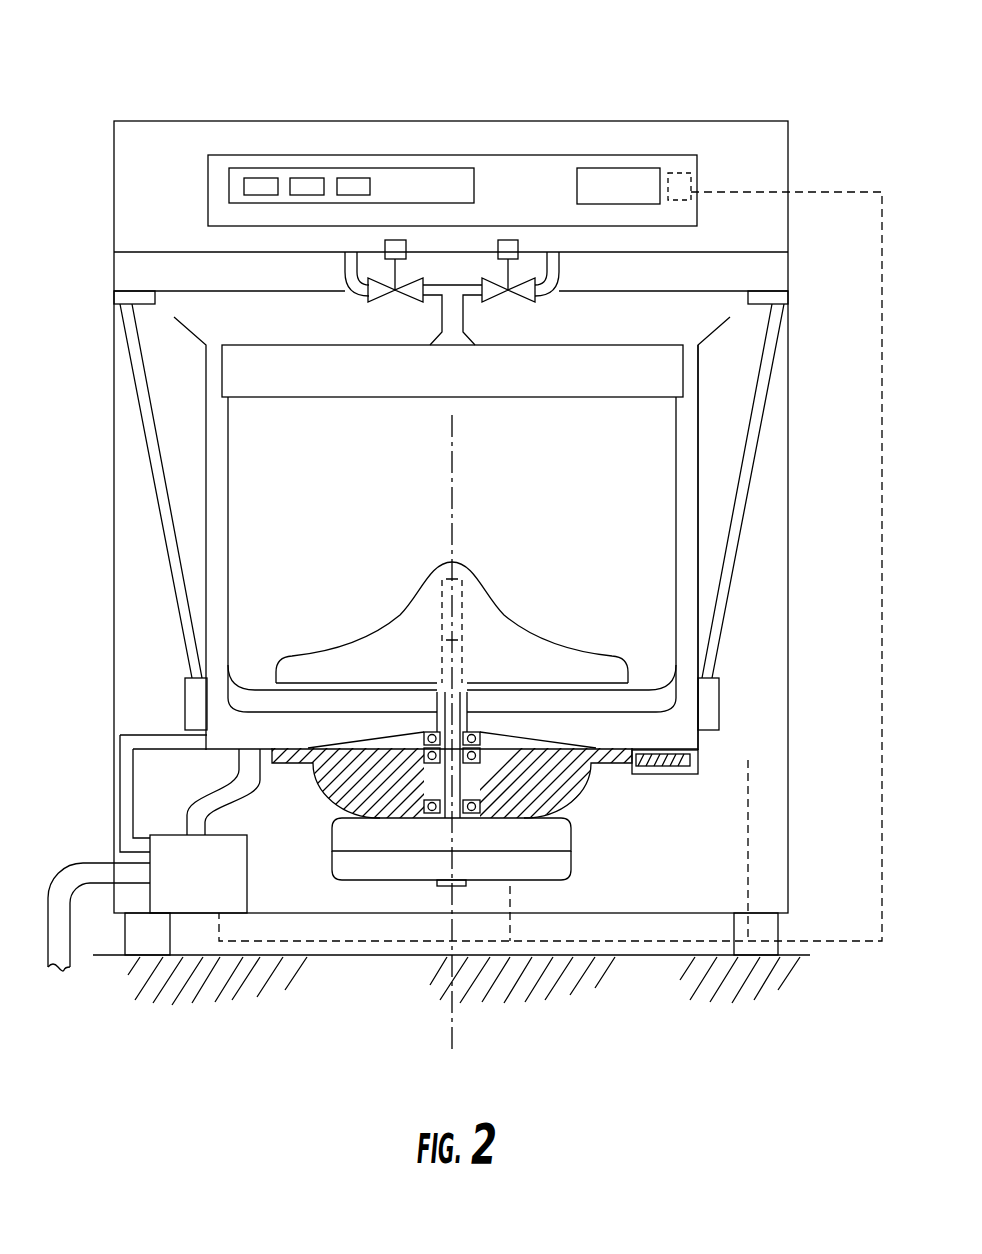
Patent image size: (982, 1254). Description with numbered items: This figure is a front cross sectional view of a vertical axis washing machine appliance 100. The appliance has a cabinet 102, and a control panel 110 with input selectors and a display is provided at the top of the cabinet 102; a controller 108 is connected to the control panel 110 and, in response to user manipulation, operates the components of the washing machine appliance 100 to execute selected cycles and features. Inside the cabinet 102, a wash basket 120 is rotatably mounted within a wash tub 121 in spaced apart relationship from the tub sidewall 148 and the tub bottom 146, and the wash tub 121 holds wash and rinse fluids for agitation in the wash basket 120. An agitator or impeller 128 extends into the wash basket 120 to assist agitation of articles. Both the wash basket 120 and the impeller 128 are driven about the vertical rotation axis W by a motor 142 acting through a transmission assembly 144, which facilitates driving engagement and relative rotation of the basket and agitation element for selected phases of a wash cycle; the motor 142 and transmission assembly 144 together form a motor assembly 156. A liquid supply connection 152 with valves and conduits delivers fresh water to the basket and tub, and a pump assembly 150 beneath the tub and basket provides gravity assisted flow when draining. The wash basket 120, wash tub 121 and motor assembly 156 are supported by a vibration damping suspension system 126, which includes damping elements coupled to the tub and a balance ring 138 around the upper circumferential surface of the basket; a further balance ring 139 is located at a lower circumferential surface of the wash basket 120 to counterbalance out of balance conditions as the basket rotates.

The washing machine appliance 100 is at (458, 504).
The cabinet 102 is at (788, 478).
The controller 108 is at (679, 173).
The control panel 110 is at (388, 168).
The wash basket 120 is at (228, 535).
The wash tub 121 is at (195, 453).
The vibration damping suspension system 126 is at (133, 380).
The agitator or impeller 128 is at (487, 585).
The balance ring 138 is at (285, 355).
The balance ring 139 is at (658, 696).
The motor 142 is at (573, 864).
The transmission assembly 144 is at (573, 826).
The tub bottom 146 is at (262, 752).
The tub sidewall 148 is at (698, 538).
The pump assembly 150 is at (163, 863).
The liquid supply connection 152 is at (449, 270).
The motor assembly 156 is at (460, 789).
The rotation axis W is at (452, 515).